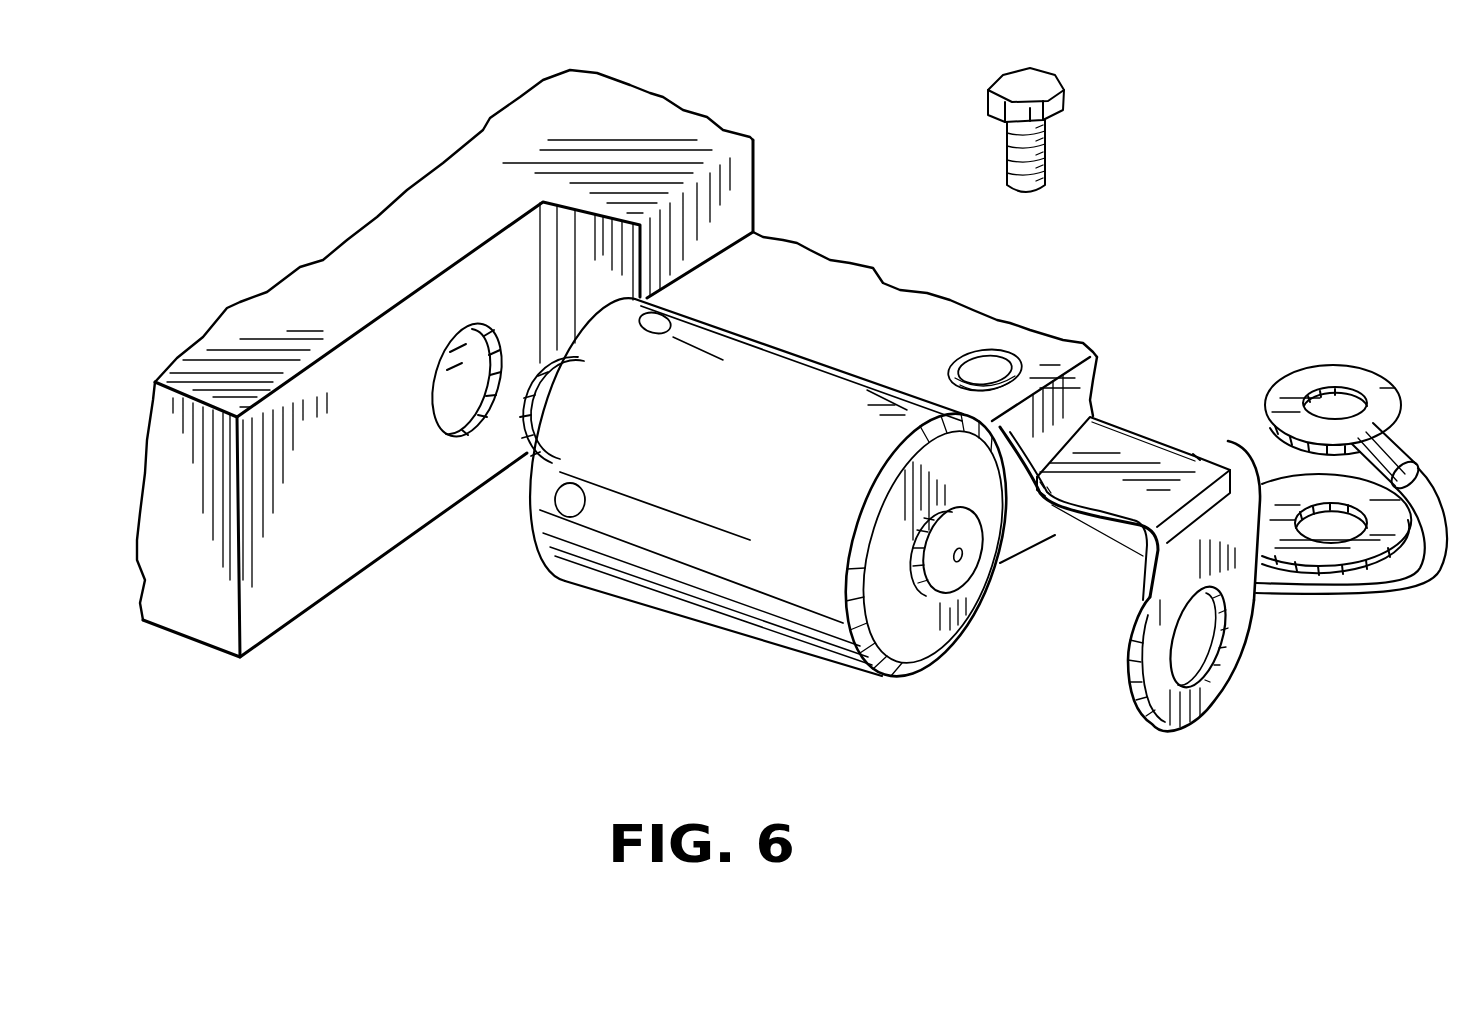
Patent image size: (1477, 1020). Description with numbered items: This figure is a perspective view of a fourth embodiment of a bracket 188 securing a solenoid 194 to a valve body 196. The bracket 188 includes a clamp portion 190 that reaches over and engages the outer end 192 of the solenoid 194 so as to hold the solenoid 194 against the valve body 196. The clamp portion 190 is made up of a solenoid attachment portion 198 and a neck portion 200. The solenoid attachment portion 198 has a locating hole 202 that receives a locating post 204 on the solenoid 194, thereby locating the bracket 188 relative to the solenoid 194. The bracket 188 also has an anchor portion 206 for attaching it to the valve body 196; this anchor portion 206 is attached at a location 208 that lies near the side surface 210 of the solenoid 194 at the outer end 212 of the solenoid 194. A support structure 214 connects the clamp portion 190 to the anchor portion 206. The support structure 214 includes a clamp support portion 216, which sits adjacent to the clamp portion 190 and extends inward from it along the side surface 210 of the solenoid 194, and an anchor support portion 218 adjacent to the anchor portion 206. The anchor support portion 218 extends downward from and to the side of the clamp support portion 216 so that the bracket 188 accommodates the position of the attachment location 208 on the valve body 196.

The bracket 188 is at (1207, 387).
The clamp portion 190 is at (1133, 637).
The outer end of the solenoid 192 is at (907, 645).
The solenoid 194 is at (657, 577).
The valve body 196 is at (320, 290).
The solenoid attachment portion 198 is at (1168, 705).
The neck portion 200 is at (1150, 592).
The locating hole 202 is at (1213, 657).
The locating post 204 is at (943, 590).
The anchor portion 206 is at (1363, 543).
The attachment location 208 is at (1005, 348).
The side surface of the solenoid 210 is at (827, 358).
The outer end of the solenoid 212 is at (853, 508).
The support structure 214 is at (1123, 437).
The clamp support portion 216 is at (1130, 495).
The anchor support portion 218 is at (1262, 462).